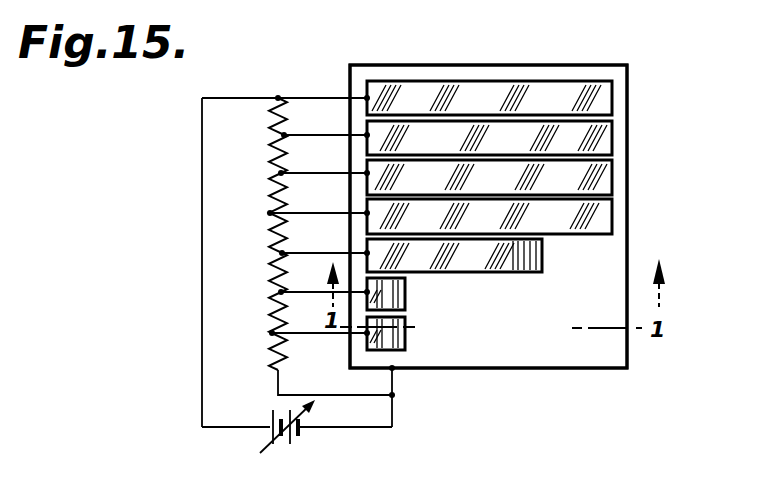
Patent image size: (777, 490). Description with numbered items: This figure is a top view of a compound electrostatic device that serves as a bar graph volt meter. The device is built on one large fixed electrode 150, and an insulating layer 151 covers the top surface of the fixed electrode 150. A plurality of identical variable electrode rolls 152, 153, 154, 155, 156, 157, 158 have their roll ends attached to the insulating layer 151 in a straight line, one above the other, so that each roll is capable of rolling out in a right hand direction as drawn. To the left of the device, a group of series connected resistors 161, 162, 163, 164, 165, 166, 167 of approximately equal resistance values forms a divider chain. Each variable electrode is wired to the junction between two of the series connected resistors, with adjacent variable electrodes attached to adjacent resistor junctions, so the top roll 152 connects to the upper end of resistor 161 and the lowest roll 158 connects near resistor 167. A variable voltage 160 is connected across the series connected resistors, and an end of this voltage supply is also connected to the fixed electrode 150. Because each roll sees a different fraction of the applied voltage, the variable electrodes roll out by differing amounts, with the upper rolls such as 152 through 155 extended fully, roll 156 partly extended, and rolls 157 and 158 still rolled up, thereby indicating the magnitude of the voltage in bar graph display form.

The fixed electrode 150 is at (550, 41).
The insulating layer 151 is at (582, 72).
The variable electrode roll 152 is at (600, 98).
The variable electrode roll 153 is at (592, 140).
The variable electrode roll 154 is at (595, 178).
The variable electrode roll 155 is at (590, 216).
The variable electrode roll 156 is at (530, 258).
The variable electrode roll 157 is at (393, 295).
The variable electrode roll 158 is at (397, 335).
The variable voltage 160 is at (280, 443).
The resistor 161 is at (268, 113).
The resistor 162 is at (270, 152).
The resistor 163 is at (269, 193).
The resistor 164 is at (270, 232).
The resistor 165 is at (269, 266).
The resistor 166 is at (270, 316).
The resistor 167 is at (270, 349).